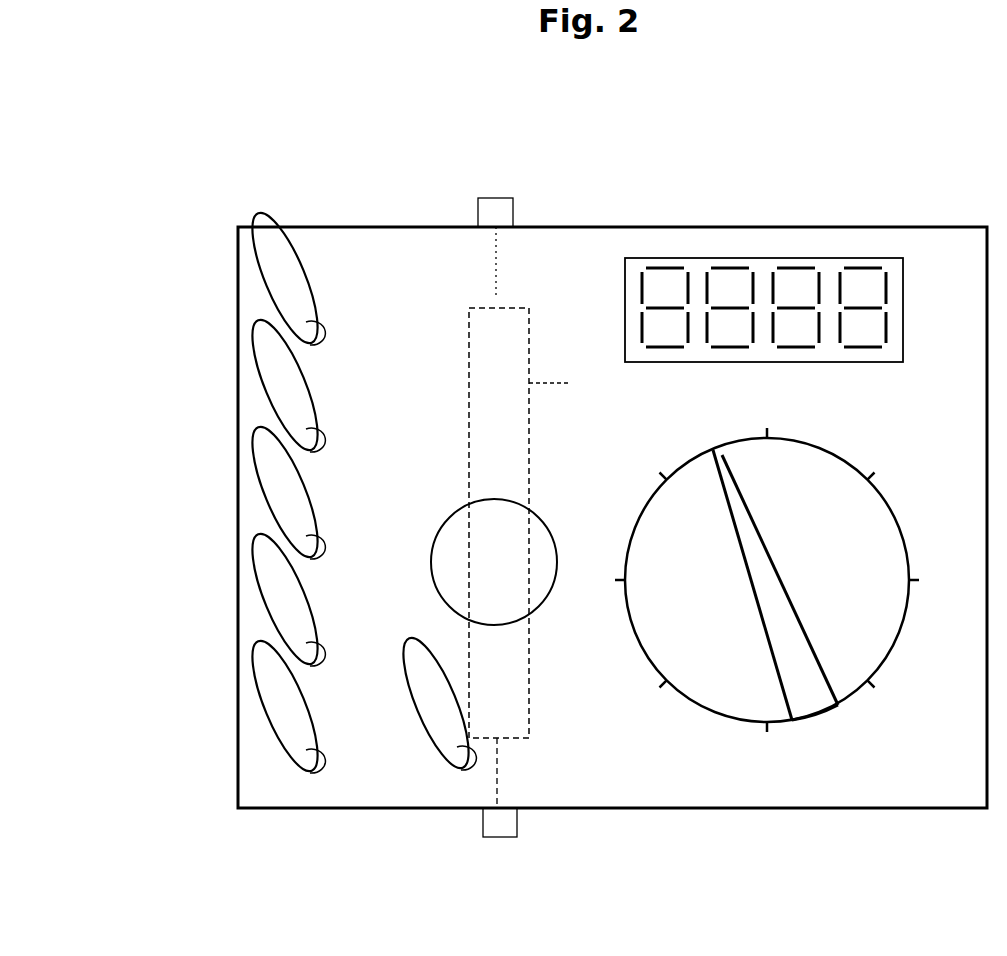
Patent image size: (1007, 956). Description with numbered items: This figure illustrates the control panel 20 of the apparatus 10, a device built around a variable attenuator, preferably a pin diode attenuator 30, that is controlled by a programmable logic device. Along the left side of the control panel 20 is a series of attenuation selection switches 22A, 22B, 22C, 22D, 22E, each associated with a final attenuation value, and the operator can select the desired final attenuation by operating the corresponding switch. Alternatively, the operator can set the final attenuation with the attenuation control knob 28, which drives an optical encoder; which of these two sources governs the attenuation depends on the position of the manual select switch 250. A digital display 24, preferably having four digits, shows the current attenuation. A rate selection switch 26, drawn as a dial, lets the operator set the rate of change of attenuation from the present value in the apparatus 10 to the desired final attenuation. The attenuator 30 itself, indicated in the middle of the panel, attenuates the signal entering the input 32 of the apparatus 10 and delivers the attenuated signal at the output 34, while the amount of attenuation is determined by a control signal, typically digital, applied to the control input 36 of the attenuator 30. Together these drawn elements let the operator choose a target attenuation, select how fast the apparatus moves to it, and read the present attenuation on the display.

The apparatus 10 is at (690, 222).
The control panel 20 is at (397, 255).
The attenuation selection switch 22A is at (253, 222).
The attenuation selection switch 22B is at (252, 312).
The attenuation selection switch 22C is at (253, 430).
The attenuation selection switch 22D is at (253, 533).
The attenuation selection switch 22E is at (252, 637).
The manual select switch 250 is at (422, 720).
The digital display 24 is at (810, 252).
The rate selection switch 26 is at (745, 722).
The attenuation control knob 28 is at (542, 617).
The pin diode attenuator 30 is at (525, 305).
The input 32 is at (475, 202).
The output 34 is at (470, 815).
The control input 36 is at (553, 383).